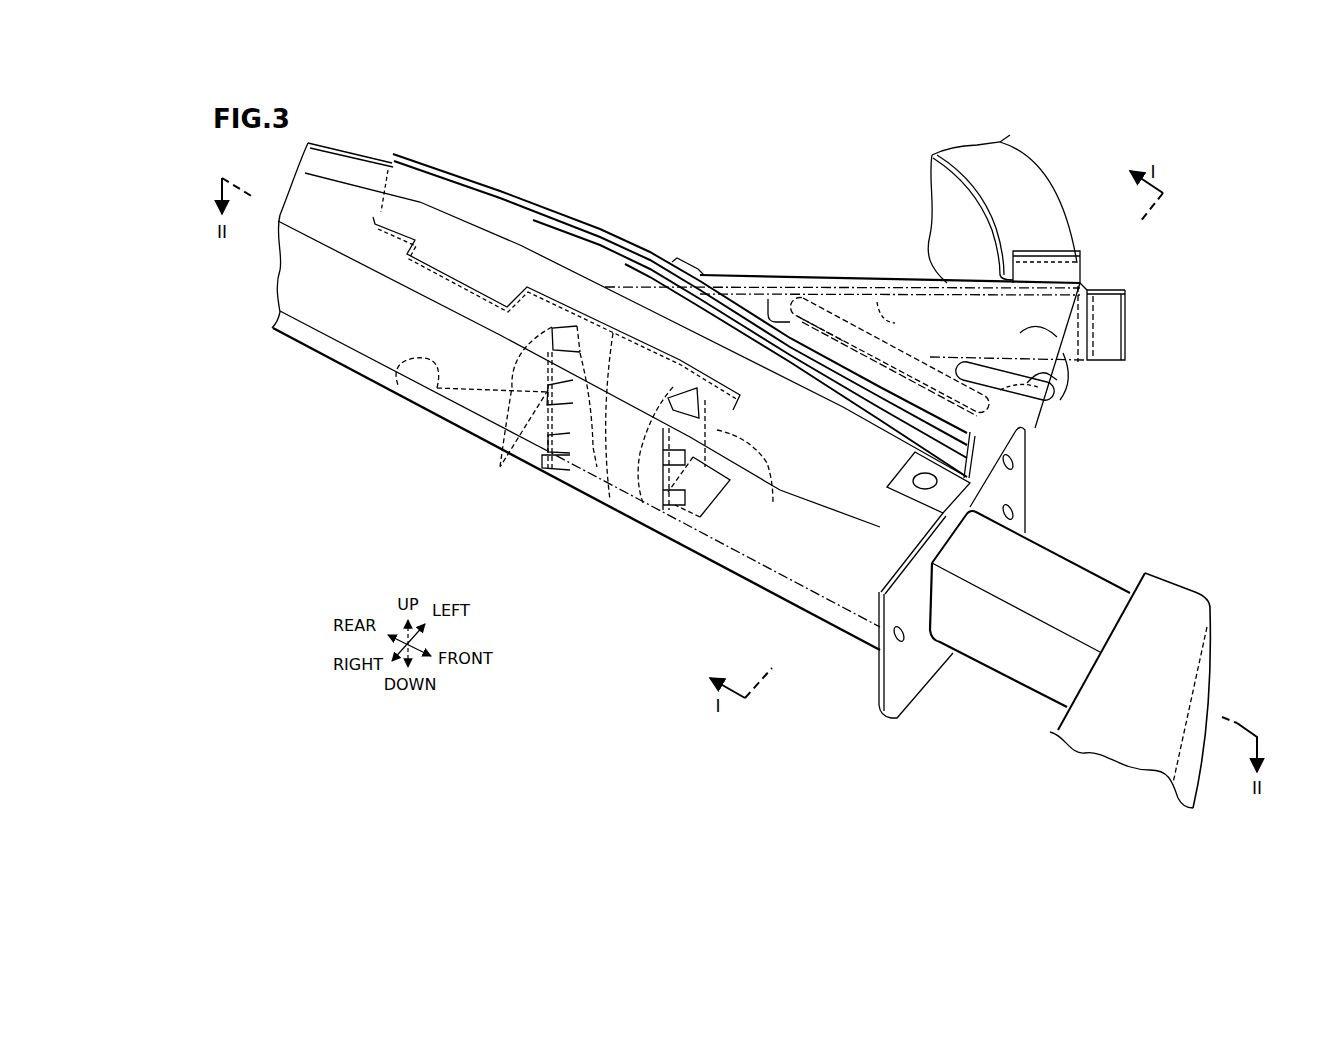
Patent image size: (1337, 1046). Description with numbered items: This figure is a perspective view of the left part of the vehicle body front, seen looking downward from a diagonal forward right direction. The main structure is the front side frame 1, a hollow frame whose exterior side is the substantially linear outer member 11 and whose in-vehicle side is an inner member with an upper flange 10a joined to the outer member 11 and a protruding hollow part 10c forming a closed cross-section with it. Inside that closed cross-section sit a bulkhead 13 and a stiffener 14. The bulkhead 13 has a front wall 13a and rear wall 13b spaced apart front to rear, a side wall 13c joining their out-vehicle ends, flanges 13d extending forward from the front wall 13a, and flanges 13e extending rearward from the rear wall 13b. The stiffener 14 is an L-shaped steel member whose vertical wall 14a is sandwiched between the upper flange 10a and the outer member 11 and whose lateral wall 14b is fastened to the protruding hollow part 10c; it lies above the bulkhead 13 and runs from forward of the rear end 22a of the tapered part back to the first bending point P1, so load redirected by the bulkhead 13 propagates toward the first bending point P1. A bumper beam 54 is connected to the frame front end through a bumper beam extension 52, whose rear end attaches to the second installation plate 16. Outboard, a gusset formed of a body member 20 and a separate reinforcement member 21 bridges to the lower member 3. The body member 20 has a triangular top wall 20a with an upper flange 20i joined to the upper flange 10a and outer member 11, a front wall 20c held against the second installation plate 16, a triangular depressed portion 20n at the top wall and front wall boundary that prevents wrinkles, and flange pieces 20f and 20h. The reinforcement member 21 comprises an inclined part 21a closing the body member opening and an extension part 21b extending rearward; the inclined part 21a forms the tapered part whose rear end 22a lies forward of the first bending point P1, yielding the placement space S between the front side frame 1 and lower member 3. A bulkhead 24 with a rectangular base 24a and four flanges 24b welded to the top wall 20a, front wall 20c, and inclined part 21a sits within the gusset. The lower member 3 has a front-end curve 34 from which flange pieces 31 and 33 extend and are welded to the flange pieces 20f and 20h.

The front side frame 1 is at (440, 430).
The lower member 3 is at (1030, 158).
The upper flange 10a is at (325, 163).
The protruding hollow part 10c is at (853, 605).
The outer member 11 is at (468, 170).
The bulkhead 13 is at (718, 430).
The front wall 13a is at (732, 492).
The rear wall 13b is at (578, 493).
The side wall 13c is at (612, 485).
The flanges 13d is at (676, 535).
The flanges 13e is at (557, 467).
The stiffener 14 is at (525, 268).
The vertical wall 14a is at (380, 170).
The lateral wall 14b is at (483, 255).
The second installation plate 16 is at (912, 675).
The body member 20 is at (1088, 387).
The top wall 20a is at (1084, 384).
The front wall 20c is at (1052, 432).
The flange piece 20f is at (1060, 271).
The flange piece 20h is at (1113, 330).
The upper flange 20i is at (1030, 495).
The depressed portion 20n is at (1060, 408).
The reinforcement member 21 is at (862, 308).
The inclined part 21a is at (893, 318).
The extension part 21b is at (604, 232).
The rear end 22a is at (692, 266).
The bulkhead 24 is at (953, 364).
The base 24a is at (948, 362).
The flanges 24b is at (778, 300).
The flange piece 31 is at (1045, 230).
The flange piece 33 is at (1120, 283).
The curve 34 is at (1027, 208).
The bumper beam extension 52 is at (1076, 571).
The bumper beam 54 is at (1178, 640).
The first bending point P1 is at (392, 380).
The placement space S is at (686, 191).